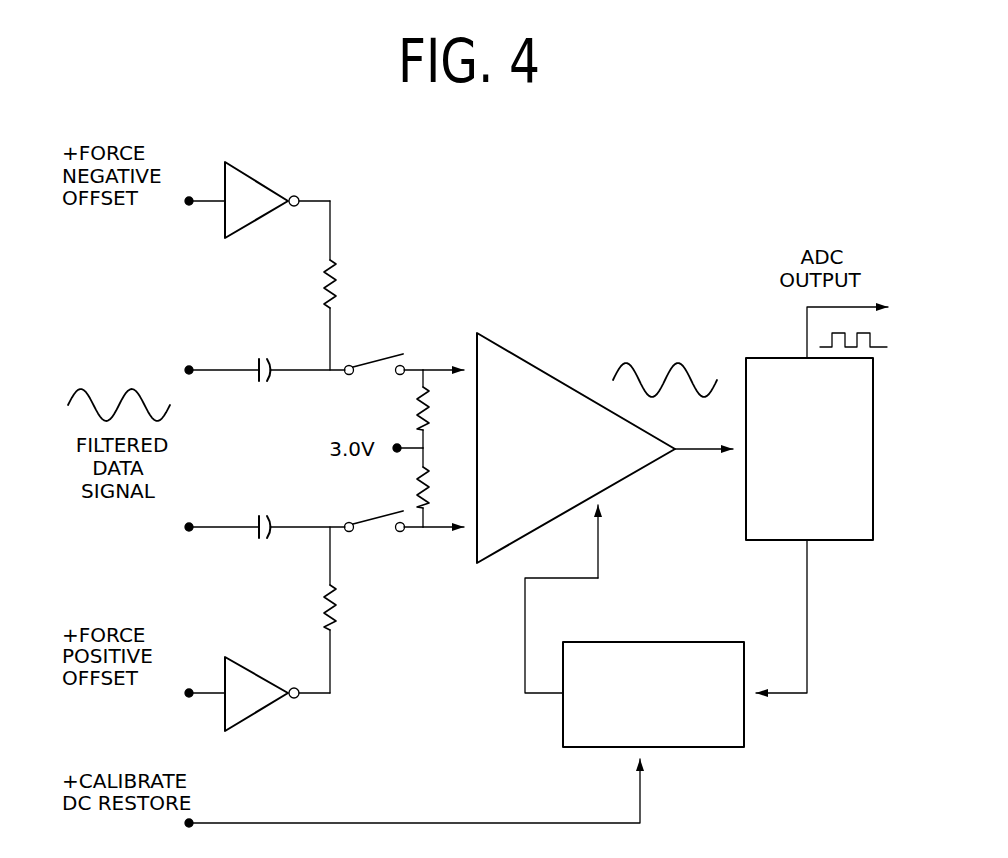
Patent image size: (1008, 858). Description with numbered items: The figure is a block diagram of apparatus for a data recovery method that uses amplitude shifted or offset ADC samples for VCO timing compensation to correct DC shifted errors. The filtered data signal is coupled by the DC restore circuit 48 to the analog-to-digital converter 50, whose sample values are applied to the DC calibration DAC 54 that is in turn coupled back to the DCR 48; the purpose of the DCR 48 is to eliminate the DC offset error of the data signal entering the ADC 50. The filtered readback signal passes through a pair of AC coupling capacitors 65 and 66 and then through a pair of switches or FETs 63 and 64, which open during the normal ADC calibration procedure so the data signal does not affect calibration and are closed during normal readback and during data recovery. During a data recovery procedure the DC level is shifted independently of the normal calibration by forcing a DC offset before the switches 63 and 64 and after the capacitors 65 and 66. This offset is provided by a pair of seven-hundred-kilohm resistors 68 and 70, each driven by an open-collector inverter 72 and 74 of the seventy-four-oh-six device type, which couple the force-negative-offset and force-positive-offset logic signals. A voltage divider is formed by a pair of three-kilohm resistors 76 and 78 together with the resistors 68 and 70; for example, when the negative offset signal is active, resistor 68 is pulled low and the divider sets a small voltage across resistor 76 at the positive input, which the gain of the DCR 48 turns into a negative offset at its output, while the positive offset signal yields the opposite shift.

The DC restore (DCR) circuit 48 is at (605, 448).
The analog-to-digital converter (ADC) 50 is at (817, 423).
The DC calibration digital-to-analog converter (DAC) 54 is at (498, 664).
The switch S1 63 is at (398, 352).
The switch S2 64 is at (400, 532).
The AC coupling capacitor 65 is at (262, 378).
The AC coupling capacitor 66 is at (263, 517).
The resistor 68 is at (330, 260).
The resistor 70 is at (330, 585).
The inverter 72 is at (270, 183).
The inverter 74 is at (267, 708).
The resistor 76 is at (415, 402).
The resistor 78 is at (417, 472).